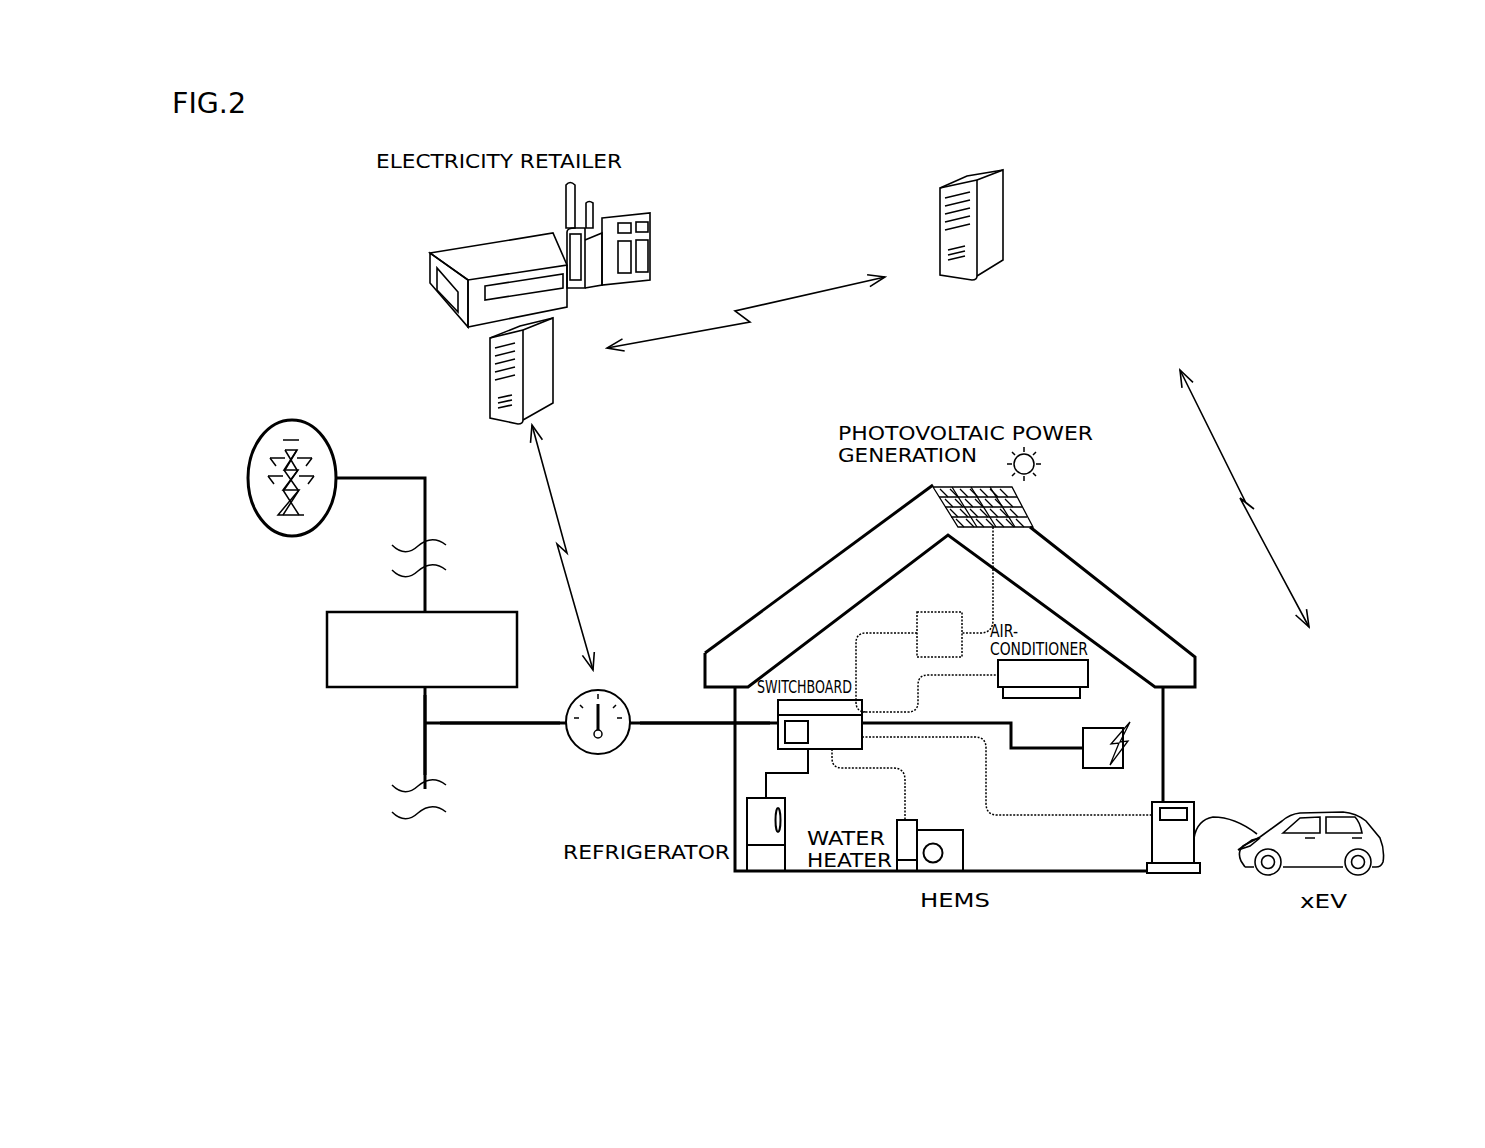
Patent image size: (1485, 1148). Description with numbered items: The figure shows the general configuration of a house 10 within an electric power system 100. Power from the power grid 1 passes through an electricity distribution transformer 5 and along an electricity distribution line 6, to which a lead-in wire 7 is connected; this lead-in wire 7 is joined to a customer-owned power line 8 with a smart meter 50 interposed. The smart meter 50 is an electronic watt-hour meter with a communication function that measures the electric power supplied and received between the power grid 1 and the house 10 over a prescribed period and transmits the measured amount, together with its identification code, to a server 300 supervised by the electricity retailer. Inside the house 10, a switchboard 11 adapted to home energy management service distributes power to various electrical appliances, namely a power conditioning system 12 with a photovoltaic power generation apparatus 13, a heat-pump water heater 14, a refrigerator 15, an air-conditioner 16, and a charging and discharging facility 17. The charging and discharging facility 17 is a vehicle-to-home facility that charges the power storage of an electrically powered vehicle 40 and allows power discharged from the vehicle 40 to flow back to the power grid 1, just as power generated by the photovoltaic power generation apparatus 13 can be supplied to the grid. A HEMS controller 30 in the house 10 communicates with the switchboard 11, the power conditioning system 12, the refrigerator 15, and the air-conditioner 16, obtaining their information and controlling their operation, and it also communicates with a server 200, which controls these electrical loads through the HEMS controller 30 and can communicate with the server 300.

The power grid 1 is at (308, 432).
The electricity distribution transformer 5 is at (466, 613).
The electricity distribution line 6 is at (420, 739).
The lead-in wire 7 is at (505, 726).
The customer-owned power line 8 is at (683, 726).
The house 10 is at (1141, 577).
The switchboard 11 is at (862, 700).
The power conditioning system 12 is at (948, 612).
The photovoltaic power generation apparatus 13 is at (1028, 513).
The heat-pump water heater 14 is at (938, 830).
The refrigerator 15 is at (779, 798).
The air-conditioner 16 is at (1085, 690).
The charging and discharging facility 17 is at (1175, 802).
The HEMS controller 30 is at (1095, 768).
The electrically powered vehicle 40 is at (1352, 820).
The smart meter 50 is at (621, 703).
The electric power system 100 is at (1176, 173).
The server 200 is at (1000, 218).
The server 300 is at (488, 384).